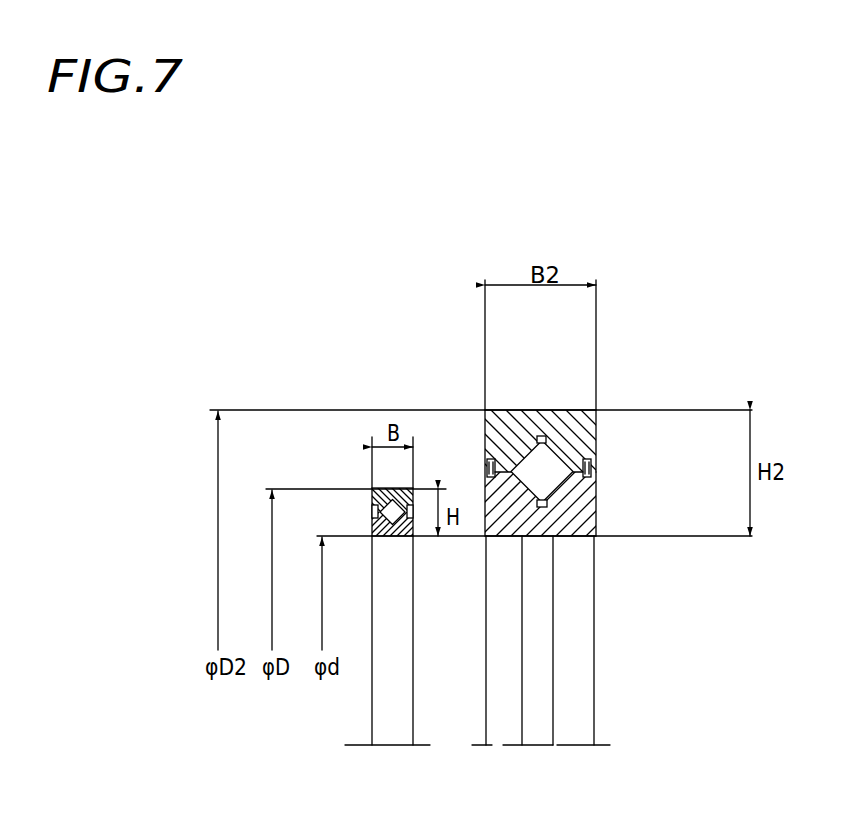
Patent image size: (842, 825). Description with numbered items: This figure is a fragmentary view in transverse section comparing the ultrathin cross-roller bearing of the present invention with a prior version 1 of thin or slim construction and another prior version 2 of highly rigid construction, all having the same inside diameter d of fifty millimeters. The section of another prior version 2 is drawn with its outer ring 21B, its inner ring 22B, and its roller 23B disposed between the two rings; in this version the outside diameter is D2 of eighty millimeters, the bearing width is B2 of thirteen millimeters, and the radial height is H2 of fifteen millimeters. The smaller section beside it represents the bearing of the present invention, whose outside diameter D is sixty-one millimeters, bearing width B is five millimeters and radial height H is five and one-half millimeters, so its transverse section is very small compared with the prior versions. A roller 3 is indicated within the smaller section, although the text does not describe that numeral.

The prior version 1 is at (374, 497).
The another prior version 2 is at (384, 517).
The rolling element 3 is at (392, 527).
The outer ring 21B is at (592, 442).
The inner ring 22B is at (592, 497).
The roller 23B is at (543, 458).